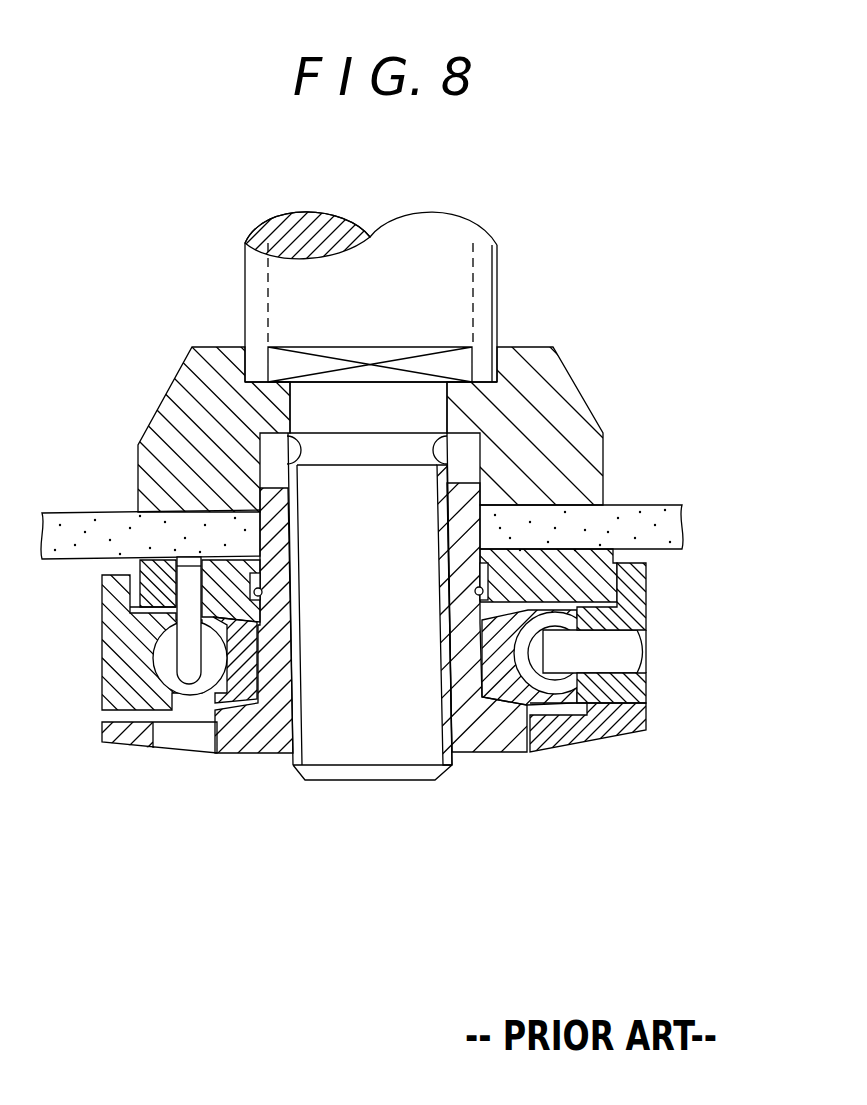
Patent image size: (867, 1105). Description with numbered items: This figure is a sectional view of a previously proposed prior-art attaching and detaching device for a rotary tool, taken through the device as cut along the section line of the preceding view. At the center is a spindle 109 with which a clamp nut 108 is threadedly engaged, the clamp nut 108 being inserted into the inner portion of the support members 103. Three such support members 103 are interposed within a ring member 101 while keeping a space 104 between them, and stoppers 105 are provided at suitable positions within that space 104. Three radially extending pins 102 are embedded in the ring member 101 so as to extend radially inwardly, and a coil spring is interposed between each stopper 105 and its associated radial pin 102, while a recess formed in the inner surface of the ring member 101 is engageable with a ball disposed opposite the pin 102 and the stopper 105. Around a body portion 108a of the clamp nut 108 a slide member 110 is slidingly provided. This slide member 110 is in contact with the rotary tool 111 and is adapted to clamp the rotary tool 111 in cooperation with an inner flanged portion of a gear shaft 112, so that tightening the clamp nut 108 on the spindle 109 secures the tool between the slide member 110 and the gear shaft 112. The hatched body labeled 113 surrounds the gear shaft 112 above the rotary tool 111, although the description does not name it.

The ring member 101 is at (645, 605).
The radial pin 102 is at (617, 653).
The support member 103 is at (503, 695).
The space 104 is at (567, 697).
The stopper 105 is at (190, 651).
The clamp nut 108 is at (262, 735).
The body portion of the clamp nut 108a is at (467, 510).
The spindle 109 is at (374, 732).
The slide member 110 is at (590, 572).
The rotary tool 111 is at (658, 505).
The gear shaft 112 is at (460, 278).
The body 113 is at (537, 388).